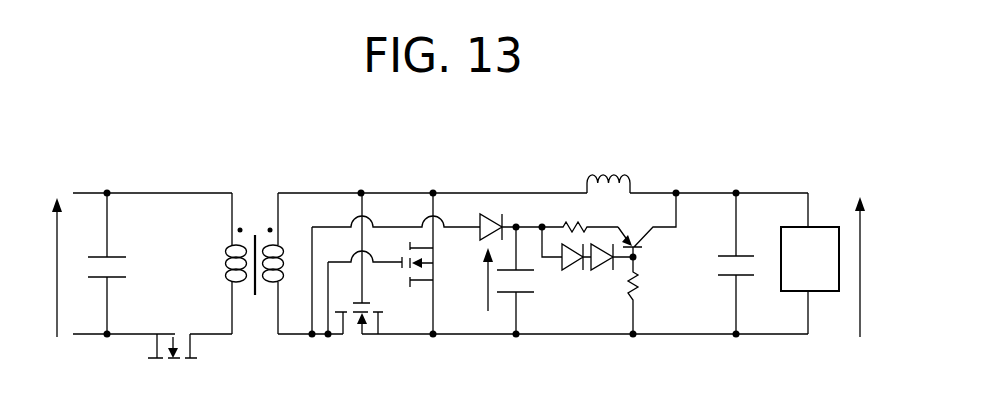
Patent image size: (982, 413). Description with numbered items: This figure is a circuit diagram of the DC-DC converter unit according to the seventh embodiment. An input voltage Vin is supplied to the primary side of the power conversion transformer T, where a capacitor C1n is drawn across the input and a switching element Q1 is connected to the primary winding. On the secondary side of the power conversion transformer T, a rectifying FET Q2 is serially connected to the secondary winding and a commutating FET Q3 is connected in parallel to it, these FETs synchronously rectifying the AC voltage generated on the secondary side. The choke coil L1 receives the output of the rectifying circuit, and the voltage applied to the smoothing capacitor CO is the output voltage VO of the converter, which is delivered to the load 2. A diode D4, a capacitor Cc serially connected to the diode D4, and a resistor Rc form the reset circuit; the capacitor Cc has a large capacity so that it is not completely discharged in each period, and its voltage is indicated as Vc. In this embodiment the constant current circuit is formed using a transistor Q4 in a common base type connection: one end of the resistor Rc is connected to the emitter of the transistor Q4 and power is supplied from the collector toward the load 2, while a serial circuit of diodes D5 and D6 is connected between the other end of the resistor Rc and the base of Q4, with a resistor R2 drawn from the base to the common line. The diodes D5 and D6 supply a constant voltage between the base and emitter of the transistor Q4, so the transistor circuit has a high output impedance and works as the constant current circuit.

The load 2 is at (823, 227).
The input capacitor C1n is at (132, 263).
The power conversion transformer T is at (255, 248).
The primary switching transistor Q1 is at (152, 365).
The rectifying FET Q2 is at (359, 280).
The commutating FET Q3 is at (416, 263).
The diode D4 is at (492, 219).
The capacitor Cc is at (526, 280).
The control voltage Vc is at (474, 279).
The resistor Rc is at (580, 215).
The transistor Q4 is at (646, 225).
The diode D5 is at (566, 262).
The diode D6 is at (610, 270).
The resistor R2 is at (651, 295).
The choke coil L1 is at (608, 170).
The smoothing capacitor CO is at (715, 263).
The input voltage Vin is at (35, 267).
The output voltage VO is at (877, 267).